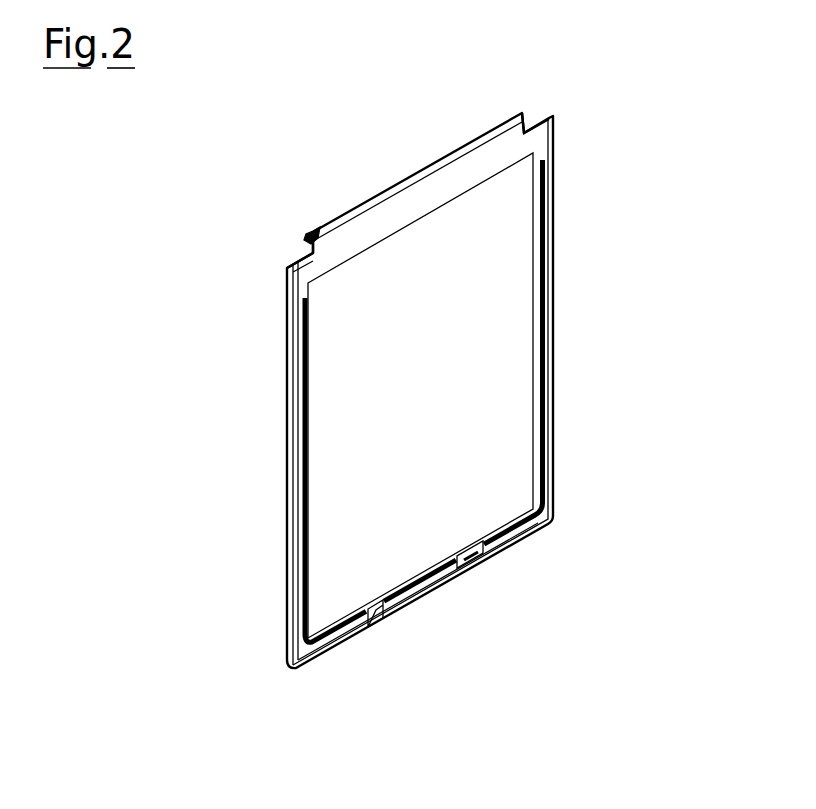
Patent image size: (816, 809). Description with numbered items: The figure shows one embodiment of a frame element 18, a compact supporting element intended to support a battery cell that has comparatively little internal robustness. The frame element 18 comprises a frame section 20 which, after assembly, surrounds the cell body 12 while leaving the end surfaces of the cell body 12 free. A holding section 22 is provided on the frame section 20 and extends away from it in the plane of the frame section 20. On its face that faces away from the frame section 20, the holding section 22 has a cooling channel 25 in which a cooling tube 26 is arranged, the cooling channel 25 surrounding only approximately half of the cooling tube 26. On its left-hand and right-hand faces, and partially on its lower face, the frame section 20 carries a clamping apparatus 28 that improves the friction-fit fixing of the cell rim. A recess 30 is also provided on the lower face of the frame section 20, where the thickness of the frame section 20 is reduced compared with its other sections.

The cell body 12 is at (430, 418).
The frame element 18 is at (453, 344).
The frame section 20 is at (425, 344).
The holding section 22 is at (531, 117).
The cooling channel 25 is at (312, 236).
The cooling tube 26 is at (305, 240).
The clamping apparatus 28 is at (555, 407).
The recess 30 is at (423, 588).